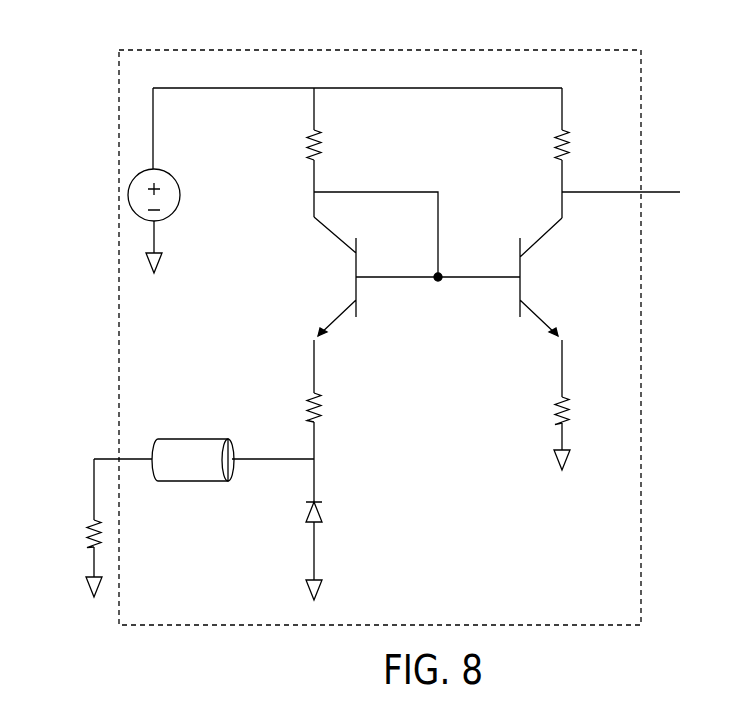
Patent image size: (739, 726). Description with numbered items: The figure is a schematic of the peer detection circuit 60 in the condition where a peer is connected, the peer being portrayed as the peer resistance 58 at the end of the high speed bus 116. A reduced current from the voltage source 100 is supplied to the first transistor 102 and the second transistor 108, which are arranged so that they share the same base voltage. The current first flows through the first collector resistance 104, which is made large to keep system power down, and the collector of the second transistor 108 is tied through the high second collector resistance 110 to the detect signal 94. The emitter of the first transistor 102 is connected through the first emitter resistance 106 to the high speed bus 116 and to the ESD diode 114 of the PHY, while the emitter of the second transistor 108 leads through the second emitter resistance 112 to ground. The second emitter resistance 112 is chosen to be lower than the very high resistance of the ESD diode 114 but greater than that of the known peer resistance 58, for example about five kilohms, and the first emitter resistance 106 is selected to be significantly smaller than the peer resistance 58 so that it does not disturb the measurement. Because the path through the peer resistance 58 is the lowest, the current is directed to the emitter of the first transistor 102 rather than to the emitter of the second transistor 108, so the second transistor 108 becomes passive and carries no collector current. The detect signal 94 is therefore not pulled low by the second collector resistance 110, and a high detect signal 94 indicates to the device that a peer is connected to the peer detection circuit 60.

The peer detection circuit 60 is at (530, 50).
The voltage source 100 is at (171, 177).
The Q1 collector resistance RCQ1 104 is at (316, 132).
The Q2 collector resistance RCQ2 110 is at (566, 132).
The transistor Q1 102 is at (357, 240).
The transistor Q2 108 is at (519, 240).
The Q1 emitter resistance REQ1 106 is at (316, 396).
The Q2 emitter resistance REQ2 112 is at (565, 397).
The ESD diode 114 is at (311, 501).
The high speed bus 116 is at (200, 439).
The peer resistance 58 is at (92, 522).
The detect signal 94 is at (648, 192).